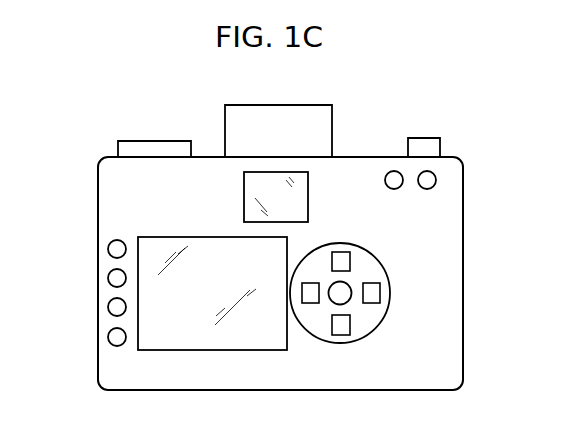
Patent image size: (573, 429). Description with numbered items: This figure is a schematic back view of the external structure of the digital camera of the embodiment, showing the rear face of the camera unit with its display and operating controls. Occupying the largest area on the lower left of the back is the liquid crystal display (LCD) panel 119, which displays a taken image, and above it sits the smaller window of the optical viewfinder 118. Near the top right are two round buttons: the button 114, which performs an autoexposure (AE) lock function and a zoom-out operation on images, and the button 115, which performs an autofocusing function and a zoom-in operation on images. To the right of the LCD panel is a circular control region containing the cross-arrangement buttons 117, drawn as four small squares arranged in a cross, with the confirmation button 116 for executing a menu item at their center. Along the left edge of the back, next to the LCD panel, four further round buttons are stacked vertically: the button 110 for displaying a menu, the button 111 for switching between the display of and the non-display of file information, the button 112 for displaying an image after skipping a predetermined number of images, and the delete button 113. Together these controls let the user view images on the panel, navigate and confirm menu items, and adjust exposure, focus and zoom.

The button 110 is at (108, 249).
The button 111 is at (108, 278).
The button 112 is at (108, 307).
The delete button 113 is at (108, 337).
The button 114 is at (394, 171).
The button 115 is at (436, 180).
The confirmation button 116 is at (351, 283).
The cross-arrangement buttons 117 is at (386, 316).
The optical viewfinder 118 is at (262, 172).
The liquid crystal display (LCD) panel 119 is at (190, 237).